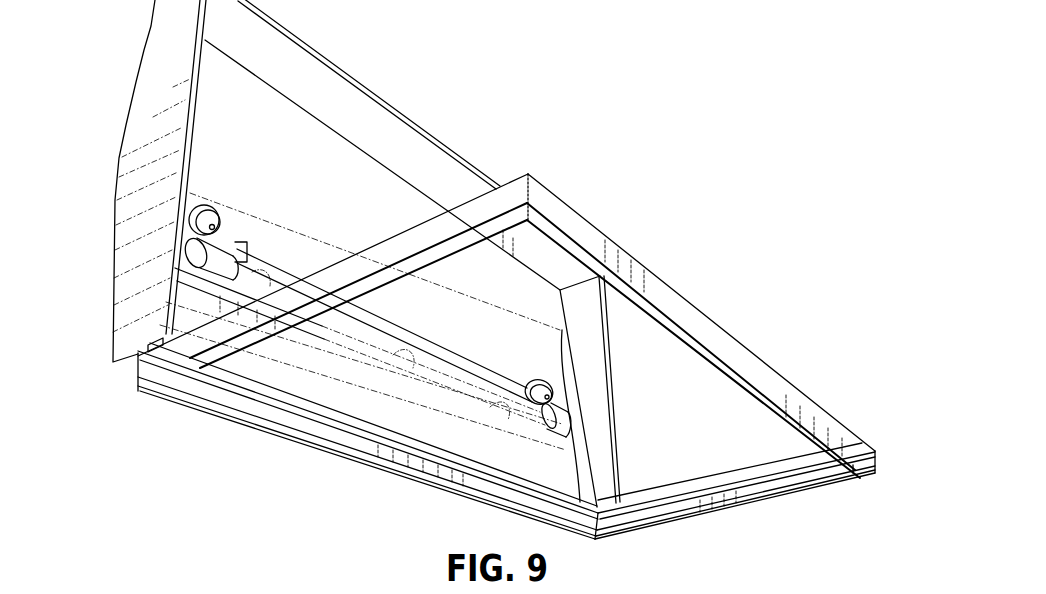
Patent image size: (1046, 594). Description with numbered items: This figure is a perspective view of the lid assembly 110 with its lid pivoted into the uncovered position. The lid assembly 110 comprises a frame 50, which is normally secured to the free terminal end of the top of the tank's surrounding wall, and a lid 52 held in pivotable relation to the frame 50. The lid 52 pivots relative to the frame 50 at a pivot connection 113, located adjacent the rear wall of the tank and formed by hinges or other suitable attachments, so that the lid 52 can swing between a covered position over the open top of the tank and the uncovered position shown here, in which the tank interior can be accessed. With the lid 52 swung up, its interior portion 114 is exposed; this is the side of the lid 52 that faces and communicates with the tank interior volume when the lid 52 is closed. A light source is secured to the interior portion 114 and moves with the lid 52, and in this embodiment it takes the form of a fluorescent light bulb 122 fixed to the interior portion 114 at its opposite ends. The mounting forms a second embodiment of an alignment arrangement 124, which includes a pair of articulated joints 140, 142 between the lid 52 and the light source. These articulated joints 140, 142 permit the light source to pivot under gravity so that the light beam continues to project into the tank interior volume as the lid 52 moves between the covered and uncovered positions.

The frame 50 is at (733, 350).
The lid 52 is at (148, 52).
The lid assembly 110 is at (655, 185).
The pivot connection 113 is at (128, 380).
The interior portion 114 is at (370, 167).
The fluorescent light bulb 122 is at (290, 277).
The alignment arrangement 124 is at (243, 198).
The articulated joint 140 is at (213, 205).
The articulated joint 142 is at (540, 381).